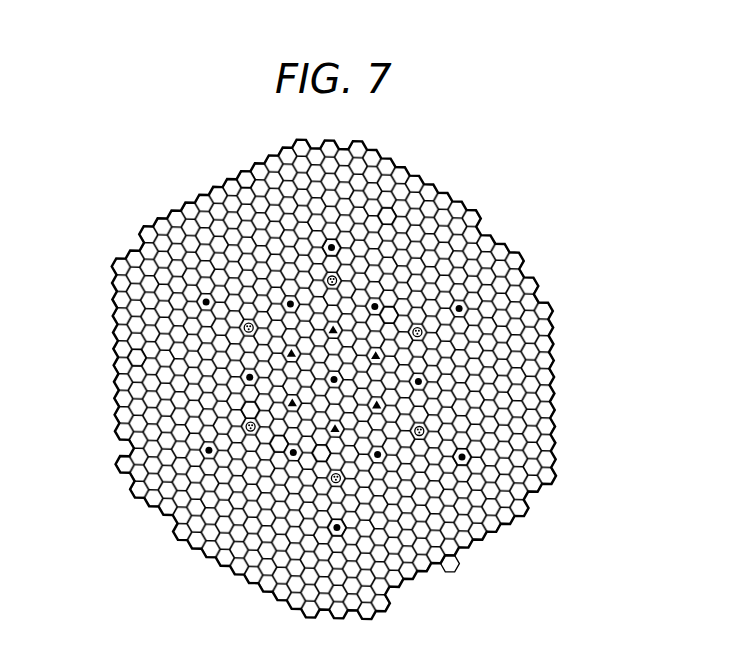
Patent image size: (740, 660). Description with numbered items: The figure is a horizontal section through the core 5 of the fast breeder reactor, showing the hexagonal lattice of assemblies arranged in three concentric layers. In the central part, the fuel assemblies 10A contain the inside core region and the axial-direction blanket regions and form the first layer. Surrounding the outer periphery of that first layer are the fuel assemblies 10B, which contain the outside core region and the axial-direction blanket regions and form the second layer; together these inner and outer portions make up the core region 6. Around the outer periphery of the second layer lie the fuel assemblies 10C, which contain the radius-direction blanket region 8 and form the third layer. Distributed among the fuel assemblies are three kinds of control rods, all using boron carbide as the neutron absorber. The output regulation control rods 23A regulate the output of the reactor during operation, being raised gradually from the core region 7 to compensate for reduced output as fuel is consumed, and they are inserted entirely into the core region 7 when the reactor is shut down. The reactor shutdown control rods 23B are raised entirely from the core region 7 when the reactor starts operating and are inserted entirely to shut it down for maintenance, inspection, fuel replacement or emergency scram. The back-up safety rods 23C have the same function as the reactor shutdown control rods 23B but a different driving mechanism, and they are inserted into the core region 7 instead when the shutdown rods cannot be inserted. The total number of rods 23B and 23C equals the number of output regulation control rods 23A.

The core 5 is at (554, 334).
The core region 6 is at (390, 313).
The core region 7 is at (475, 448).
The radius-direction blanket region 8 is at (443, 562).
The fuel assemblies 10A is at (282, 443).
The fuel assemblies 10B is at (385, 208).
The fuel assemblies 10C is at (243, 183).
The output regulation control rod 23A is at (333, 534).
The reactor shutdown control rod 23B is at (325, 452).
The back-up safety rod 23C is at (245, 413).